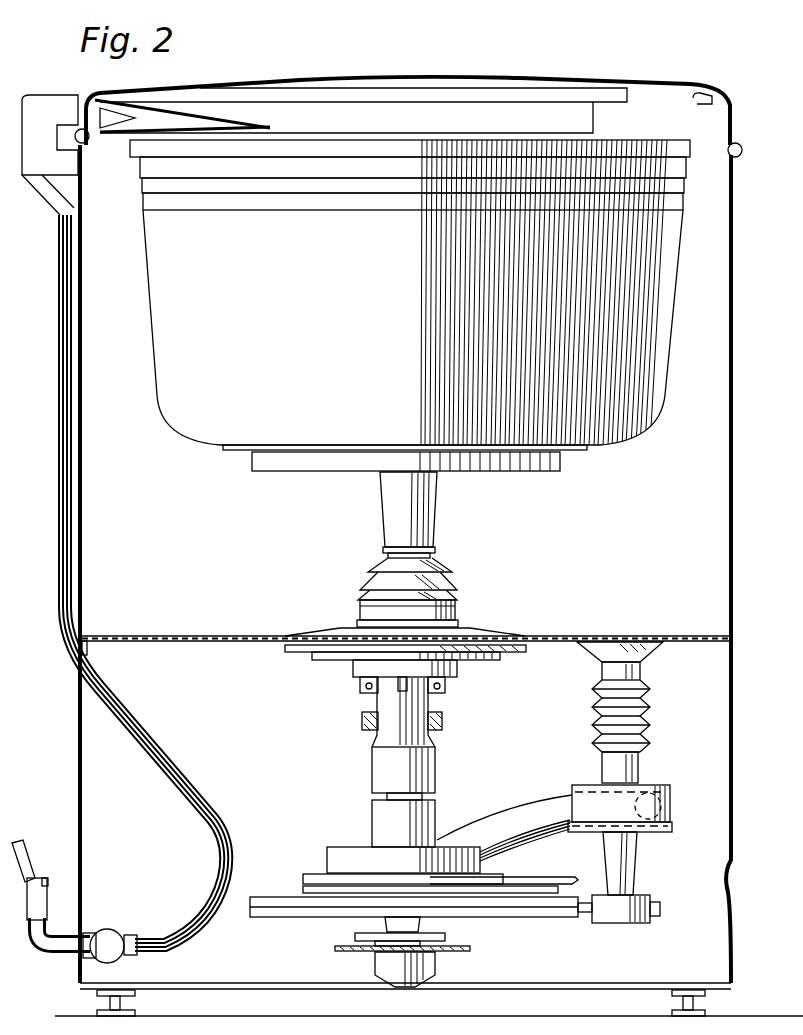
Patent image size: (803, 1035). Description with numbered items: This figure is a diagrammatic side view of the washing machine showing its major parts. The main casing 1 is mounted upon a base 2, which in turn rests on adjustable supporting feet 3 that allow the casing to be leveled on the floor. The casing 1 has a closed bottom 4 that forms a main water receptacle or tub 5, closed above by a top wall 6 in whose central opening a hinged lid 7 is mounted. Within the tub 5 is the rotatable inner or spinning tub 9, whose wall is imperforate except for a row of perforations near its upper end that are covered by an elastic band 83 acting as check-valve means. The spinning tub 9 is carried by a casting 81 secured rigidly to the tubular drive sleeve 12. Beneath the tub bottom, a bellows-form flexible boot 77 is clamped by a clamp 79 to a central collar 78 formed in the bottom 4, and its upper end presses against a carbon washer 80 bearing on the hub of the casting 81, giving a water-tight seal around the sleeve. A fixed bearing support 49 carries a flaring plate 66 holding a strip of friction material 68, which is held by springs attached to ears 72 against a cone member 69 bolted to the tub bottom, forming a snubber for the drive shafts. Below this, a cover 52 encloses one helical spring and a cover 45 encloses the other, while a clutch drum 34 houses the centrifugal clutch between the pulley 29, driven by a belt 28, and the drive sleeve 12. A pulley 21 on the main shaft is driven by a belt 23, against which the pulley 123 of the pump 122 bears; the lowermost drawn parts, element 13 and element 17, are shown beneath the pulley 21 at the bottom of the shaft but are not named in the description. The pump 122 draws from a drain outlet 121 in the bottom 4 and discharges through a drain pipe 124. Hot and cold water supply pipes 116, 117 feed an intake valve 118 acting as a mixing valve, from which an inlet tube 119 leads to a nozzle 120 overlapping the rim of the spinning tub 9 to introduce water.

The main casing 1 is at (732, 826).
The base 2 is at (732, 938).
The supporting feet 3 is at (130, 1003).
The closed bottom 4 is at (556, 636).
The main water receptacle or tub 5 is at (648, 528).
The top wall 6 is at (688, 92).
The lid 7 is at (532, 80).
The inner or spinning tub 9 is at (394, 305).
The drive sleeve 12 is at (387, 796).
The disc 13 is at (340, 946).
The cup 17 is at (436, 972).
The pulley 21 is at (290, 912).
The belt 23 is at (580, 916).
The belt 28 is at (535, 877).
The pulley 29 is at (303, 875).
The clutch drum 34 is at (327, 856).
The cover 45 is at (372, 812).
The bearing support 49 is at (388, 738).
The cover 52 is at (372, 771).
The flaring plate 66 is at (480, 652).
The friction material 68 is at (468, 645).
The cone member 69 is at (487, 658).
The ears 72 is at (362, 722).
The flexible boot 77 is at (448, 580).
The central collar 78 is at (358, 623).
The clamp 79 is at (452, 612).
The washer 80 is at (432, 552).
The casting 81 is at (436, 522).
The elastic band 83 is at (142, 184).
The hot water supply pipe 116 is at (46, 882).
The cold water supply pipe 117 is at (16, 840).
The intake valve 118 is at (114, 933).
The inlet tube 119 is at (66, 642).
The nozzle 120 is at (192, 102).
The drain outlet 121 is at (654, 716).
The pump 122 is at (662, 792).
The pulley 123 is at (648, 895).
The drain pipe 124 is at (512, 808).